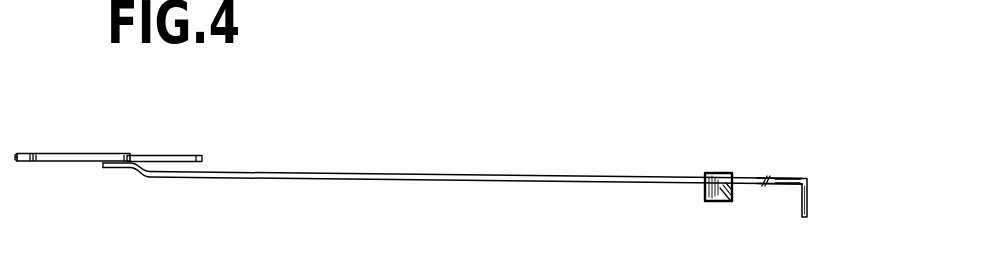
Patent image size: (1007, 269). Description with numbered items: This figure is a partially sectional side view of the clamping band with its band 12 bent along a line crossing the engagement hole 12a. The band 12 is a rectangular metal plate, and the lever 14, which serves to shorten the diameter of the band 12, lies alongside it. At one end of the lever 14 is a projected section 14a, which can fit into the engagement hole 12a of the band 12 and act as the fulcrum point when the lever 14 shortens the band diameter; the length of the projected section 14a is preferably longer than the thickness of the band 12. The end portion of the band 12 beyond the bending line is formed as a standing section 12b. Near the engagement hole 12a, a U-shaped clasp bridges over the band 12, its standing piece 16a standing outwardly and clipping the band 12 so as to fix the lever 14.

The band 12 is at (418, 175).
The engagement hole 12a is at (792, 180).
The standing section 12b is at (808, 196).
The lever 14 is at (67, 157).
The projected section 14a is at (198, 157).
The standing piece 16a is at (713, 202).